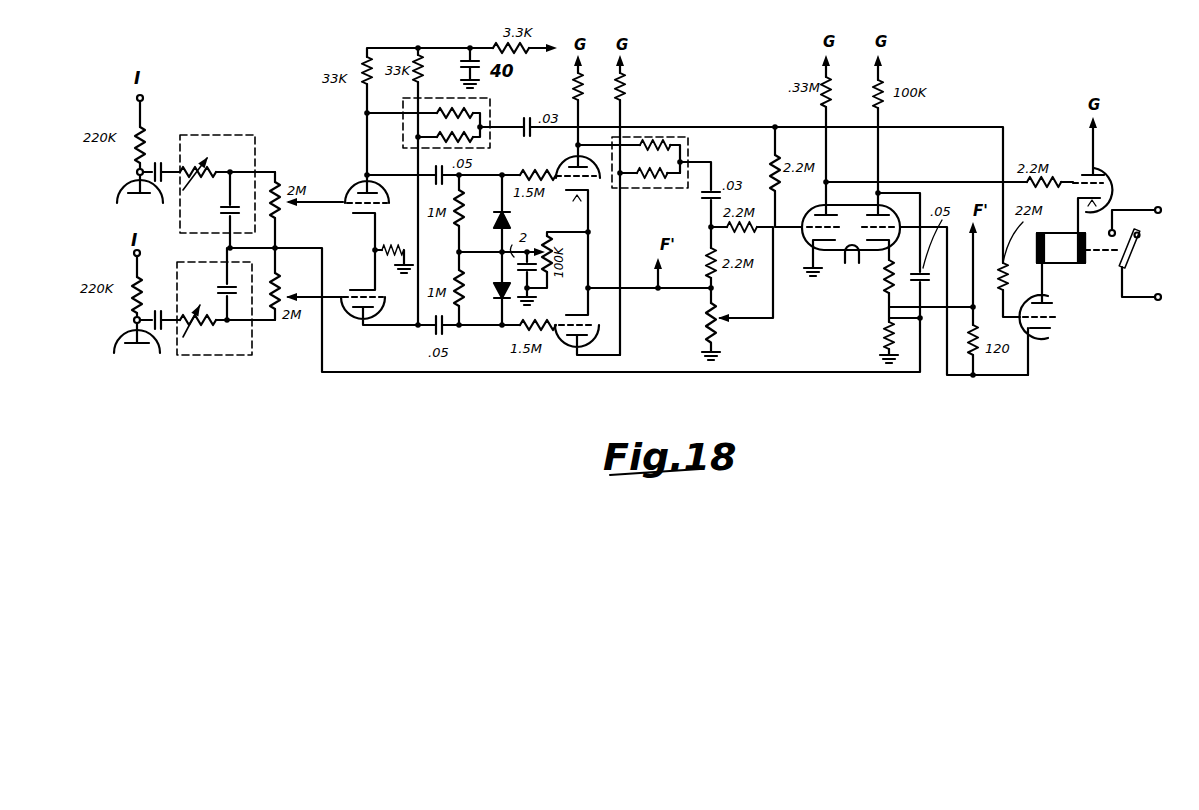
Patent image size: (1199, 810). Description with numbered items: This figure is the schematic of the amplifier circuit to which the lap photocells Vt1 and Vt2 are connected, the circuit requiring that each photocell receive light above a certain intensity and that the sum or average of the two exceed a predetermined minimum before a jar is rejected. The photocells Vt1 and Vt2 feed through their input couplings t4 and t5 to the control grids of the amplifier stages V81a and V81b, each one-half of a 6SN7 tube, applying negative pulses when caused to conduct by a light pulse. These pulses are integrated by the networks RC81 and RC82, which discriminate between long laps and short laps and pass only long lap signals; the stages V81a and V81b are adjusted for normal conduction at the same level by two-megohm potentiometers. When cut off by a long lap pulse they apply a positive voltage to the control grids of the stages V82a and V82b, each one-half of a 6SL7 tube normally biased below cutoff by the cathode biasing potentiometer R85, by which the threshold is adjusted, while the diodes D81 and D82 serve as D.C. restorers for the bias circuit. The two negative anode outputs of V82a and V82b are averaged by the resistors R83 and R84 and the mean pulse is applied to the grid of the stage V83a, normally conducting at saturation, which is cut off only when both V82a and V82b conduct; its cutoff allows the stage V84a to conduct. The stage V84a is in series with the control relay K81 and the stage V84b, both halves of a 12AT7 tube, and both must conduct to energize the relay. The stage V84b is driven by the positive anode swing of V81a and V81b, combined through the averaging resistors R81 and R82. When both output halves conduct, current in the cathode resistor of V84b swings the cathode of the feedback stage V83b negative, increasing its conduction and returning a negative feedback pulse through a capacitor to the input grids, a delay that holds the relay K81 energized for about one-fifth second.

The lap photocell Vt1 is at (118, 190).
The lap photocell Vt2 is at (115, 340).
The input terminal coupling capacitor t4 is at (146, 162).
The input terminal coupling capacitor t5 is at (130, 318).
The integrating network RC81 is at (216, 133).
The integrating network RC82 is at (217, 357).
The amplifier stage V81a is at (358, 195).
The amplifier stage V81b is at (340, 327).
The averaging resistor R81 is at (476, 117).
The averaging resistor R82 is at (476, 140).
The diode D81 is at (513, 217).
The diode D82 is at (495, 288).
The amplifier stage V82a is at (593, 183).
The amplifier stage V82b is at (593, 330).
The averaging resistor R83 is at (648, 150).
The averaging resistor R84 is at (647, 175).
The cathode biasing potentiometer R85 is at (707, 330).
The amplifier stage V83a is at (803, 248).
The feedback stage V83b is at (885, 207).
The output stage V84a is at (1105, 168).
The output stage V84b is at (1040, 338).
The control relay K81 is at (1060, 258).